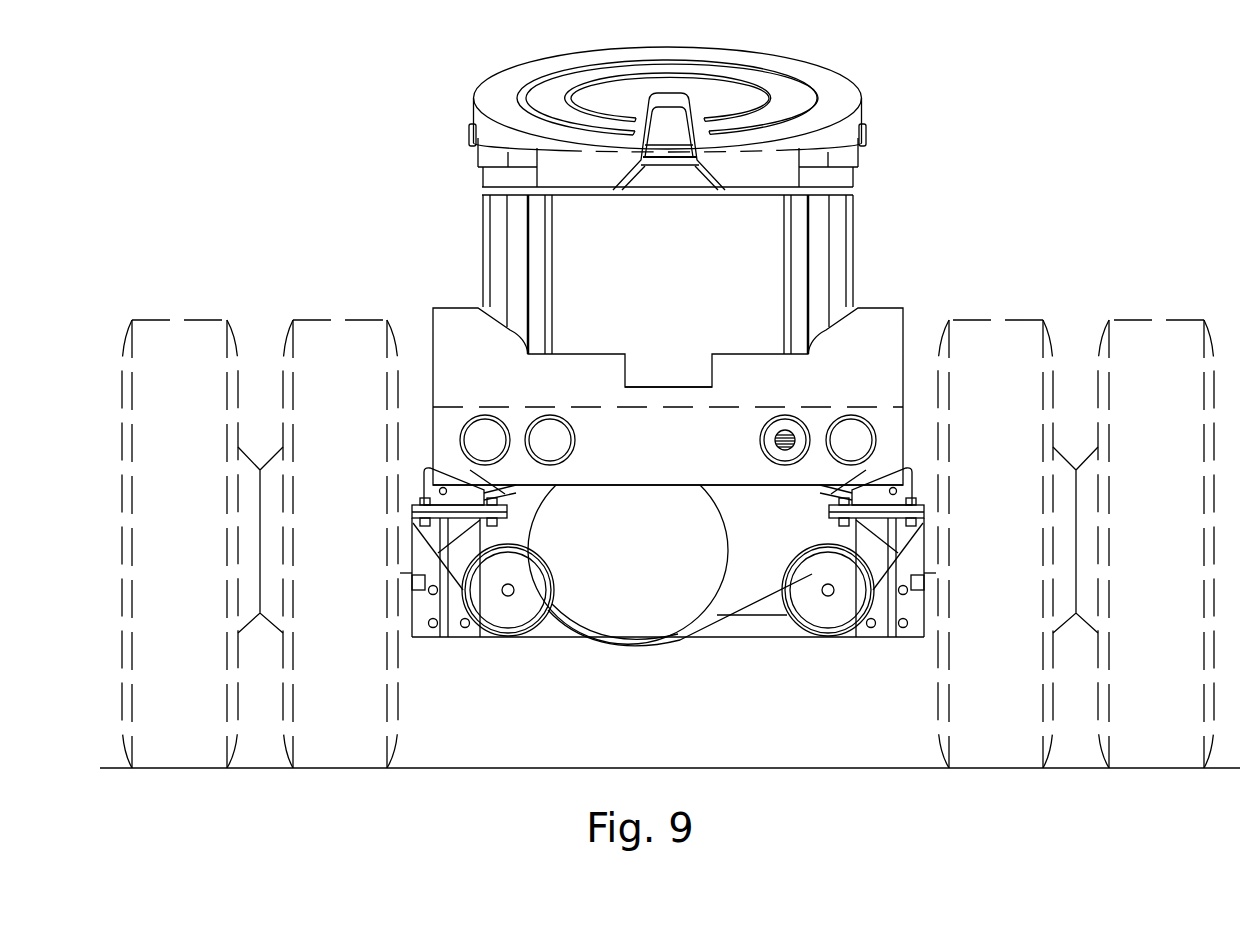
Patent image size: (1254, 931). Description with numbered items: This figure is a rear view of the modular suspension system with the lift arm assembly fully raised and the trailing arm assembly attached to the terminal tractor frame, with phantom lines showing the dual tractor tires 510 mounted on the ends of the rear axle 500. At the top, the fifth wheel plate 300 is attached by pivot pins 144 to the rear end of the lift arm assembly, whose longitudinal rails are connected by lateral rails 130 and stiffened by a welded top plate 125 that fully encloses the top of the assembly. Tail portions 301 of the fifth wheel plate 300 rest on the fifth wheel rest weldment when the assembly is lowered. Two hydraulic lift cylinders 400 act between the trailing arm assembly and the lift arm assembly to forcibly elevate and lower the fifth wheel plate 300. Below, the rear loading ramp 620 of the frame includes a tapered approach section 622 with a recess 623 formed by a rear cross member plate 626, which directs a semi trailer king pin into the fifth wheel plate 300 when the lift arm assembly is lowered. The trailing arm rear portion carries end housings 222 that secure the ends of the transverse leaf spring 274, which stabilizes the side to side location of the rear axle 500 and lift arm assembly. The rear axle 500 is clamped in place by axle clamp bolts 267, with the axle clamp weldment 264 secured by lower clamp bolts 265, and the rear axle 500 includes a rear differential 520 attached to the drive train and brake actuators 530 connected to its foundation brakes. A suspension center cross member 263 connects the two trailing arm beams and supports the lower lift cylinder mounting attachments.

The fifth wheel plate 300 is at (831, 103).
The pivot pins 144 is at (470, 133).
The lateral rails 130 is at (667, 178).
The tail portions 301 is at (567, 178).
The lift cylinder 400 is at (513, 255).
The welded top plate 125 is at (717, 275).
The rear loading ramp 620 is at (470, 320).
The tapered approach section 622 is at (487, 377).
The recess 623 is at (703, 380).
The rear cross member plate 626 is at (692, 447).
The end housings 222 is at (432, 477).
The transverse leaf spring 274 is at (508, 492).
The axle clamp bolts 267 is at (425, 603).
The lower clamp bolts 265 is at (434, 628).
The axle clamp weldment 264 is at (466, 628).
The brake actuators 530 is at (527, 612).
The rear differential 520 is at (625, 605).
The suspension center cross member 263 is at (707, 633).
The rear axle 500 is at (765, 567).
The dual tractor tires 510 is at (197, 342).